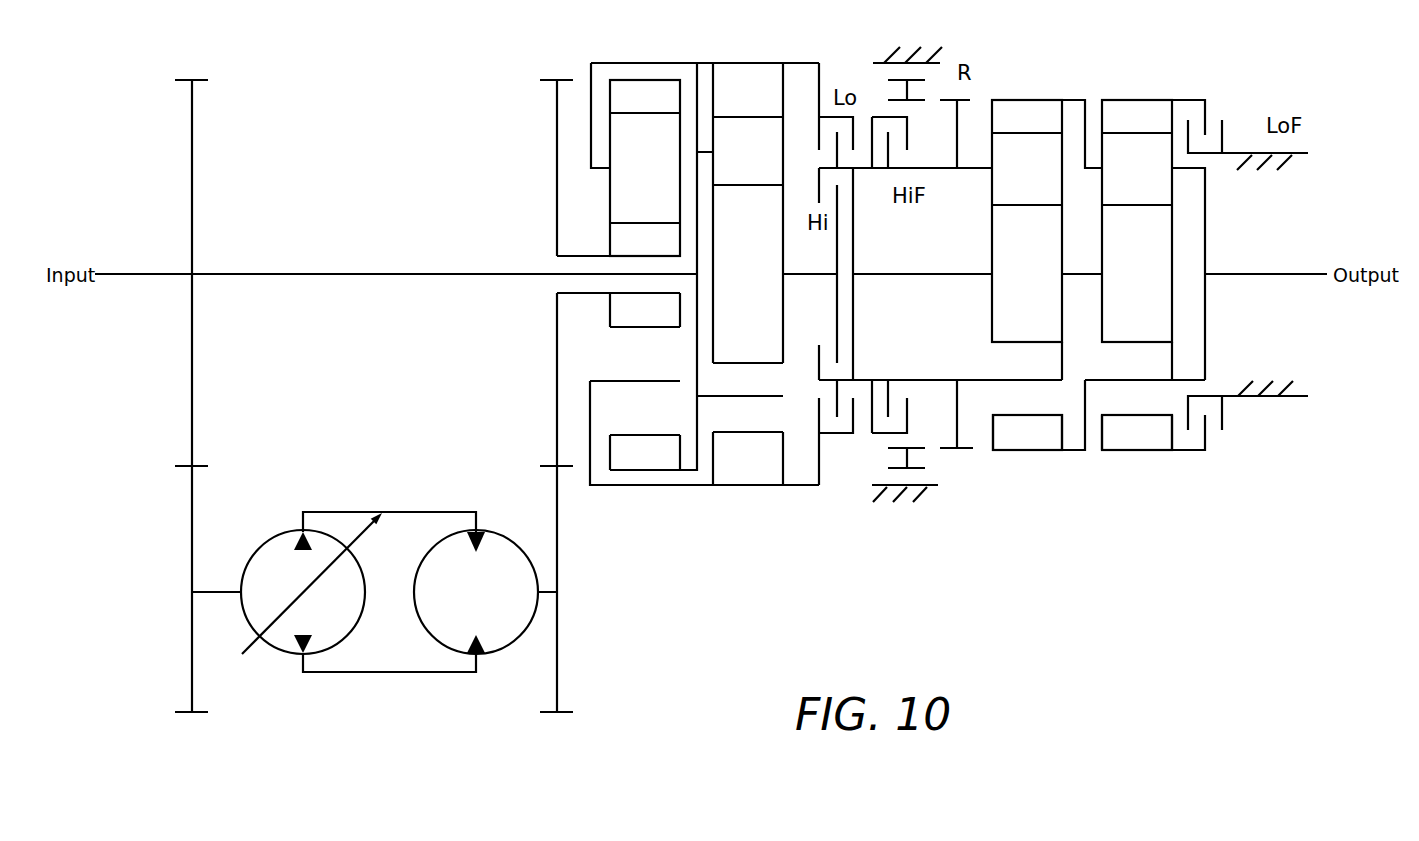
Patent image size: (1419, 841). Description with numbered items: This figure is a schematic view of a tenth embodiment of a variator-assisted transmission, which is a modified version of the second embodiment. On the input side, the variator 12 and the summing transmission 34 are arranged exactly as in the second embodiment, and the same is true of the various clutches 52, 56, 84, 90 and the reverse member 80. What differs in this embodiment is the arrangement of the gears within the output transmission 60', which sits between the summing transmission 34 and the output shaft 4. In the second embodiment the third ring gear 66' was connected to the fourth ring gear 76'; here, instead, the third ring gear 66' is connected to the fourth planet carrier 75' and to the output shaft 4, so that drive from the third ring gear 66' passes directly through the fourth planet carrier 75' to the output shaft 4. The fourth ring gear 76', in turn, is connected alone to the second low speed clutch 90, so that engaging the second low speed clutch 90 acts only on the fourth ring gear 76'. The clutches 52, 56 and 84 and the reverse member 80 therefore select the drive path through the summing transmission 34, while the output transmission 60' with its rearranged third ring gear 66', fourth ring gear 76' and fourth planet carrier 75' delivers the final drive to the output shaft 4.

The output shaft 4 is at (1292, 276).
The variator 12 is at (377, 683).
The summing transmission 34 is at (705, 497).
The clutch 52 is at (829, 113).
The clutch 56 is at (819, 381).
The reverse member 80 is at (970, 100).
The clutch 84 is at (879, 435).
The fourth ring gear 76' is at (1153, 214).
The fourth planet carrier 75' is at (1212, 274).
The second low speed clutch 90 is at (1222, 123).
The output transmission 60' is at (1099, 457).
The third ring gear 66' is at (1027, 458).